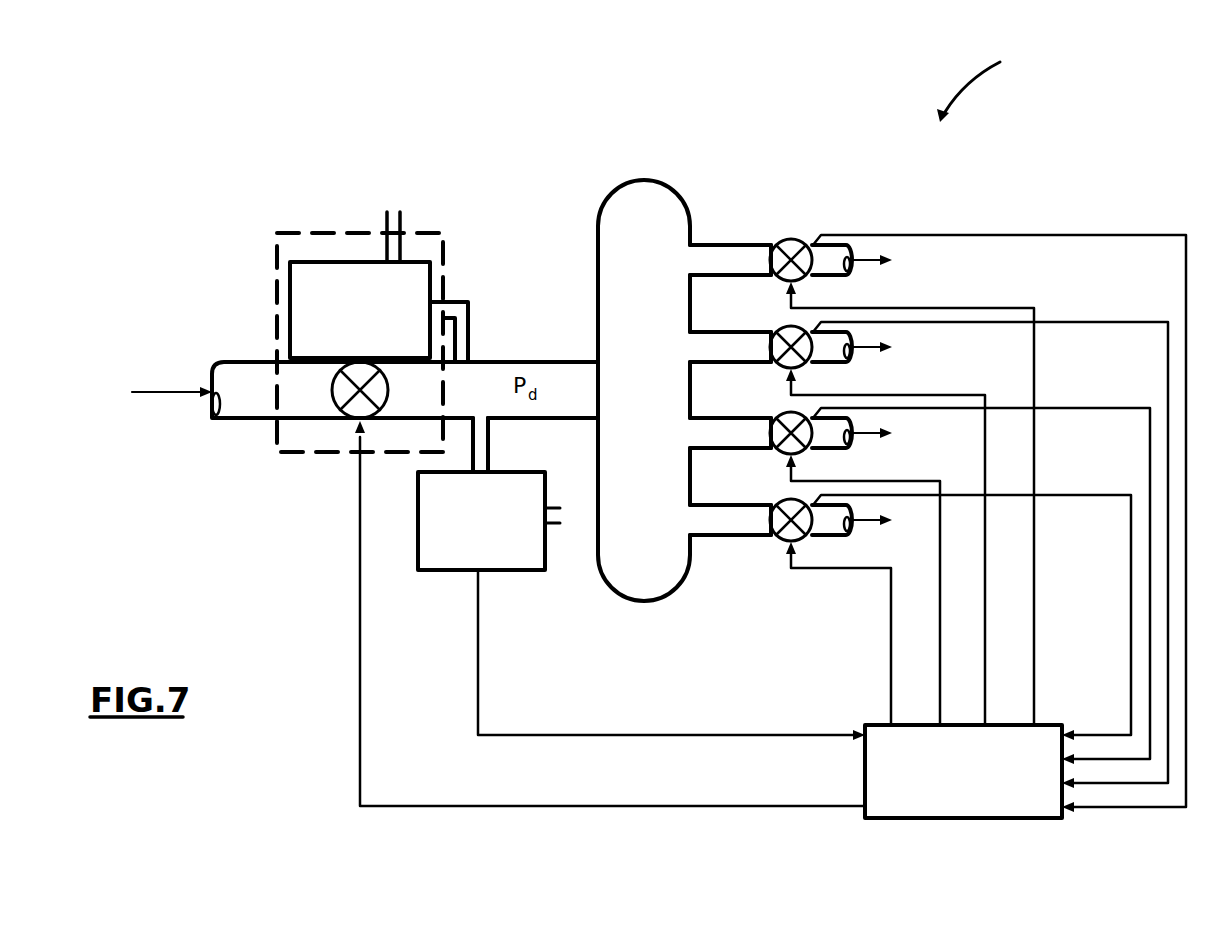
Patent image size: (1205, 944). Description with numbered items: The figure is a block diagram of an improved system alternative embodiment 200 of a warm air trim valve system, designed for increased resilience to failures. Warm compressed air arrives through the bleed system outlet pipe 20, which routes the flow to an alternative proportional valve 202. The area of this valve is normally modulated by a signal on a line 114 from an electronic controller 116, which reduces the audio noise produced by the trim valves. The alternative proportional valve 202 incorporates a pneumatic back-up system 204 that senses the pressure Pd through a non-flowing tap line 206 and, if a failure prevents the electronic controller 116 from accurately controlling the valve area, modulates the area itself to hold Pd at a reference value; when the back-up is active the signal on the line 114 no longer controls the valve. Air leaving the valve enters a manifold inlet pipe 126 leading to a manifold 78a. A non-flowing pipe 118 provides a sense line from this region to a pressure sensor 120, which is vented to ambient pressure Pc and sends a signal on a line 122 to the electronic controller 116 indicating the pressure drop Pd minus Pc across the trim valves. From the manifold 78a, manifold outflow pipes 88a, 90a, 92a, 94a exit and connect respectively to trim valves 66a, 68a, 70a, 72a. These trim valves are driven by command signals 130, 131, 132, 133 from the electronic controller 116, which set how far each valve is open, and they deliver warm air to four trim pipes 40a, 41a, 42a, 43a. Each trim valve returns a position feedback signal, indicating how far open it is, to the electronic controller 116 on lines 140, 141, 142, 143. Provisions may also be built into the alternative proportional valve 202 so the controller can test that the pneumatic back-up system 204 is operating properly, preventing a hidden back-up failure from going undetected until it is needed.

The bleed system outlet pipe 20 is at (243, 414).
The manifold inlet pipe 126 is at (483, 372).
The alternative proportional valve 202 is at (322, 226).
The pneumatic back-up system 204 is at (423, 260).
The non-flowing tap line 206 is at (467, 303).
The non-flowing pipe 118 is at (492, 447).
The pressure sensor 120 is at (515, 570).
The line 122 is at (478, 663).
The line 114 is at (360, 665).
The electronic controller 116 is at (905, 818).
The manifold 78a is at (628, 196).
The manifold outflow pipe 94a is at (730, 275).
The manifold outflow pipe 92a is at (758, 362).
The manifold outflow pipe 90a is at (745, 448).
The manifold outflow pipe 88a is at (745, 535).
The trim valve 72a is at (785, 282).
The trim valve 70a is at (785, 370).
The trim valve 68a is at (783, 455).
The trim valve 66a is at (788, 542).
The trim pipe 43a is at (826, 277).
The trim pipe 42a is at (827, 363).
The trim pipe 41a is at (827, 449).
The trim pipe 40a is at (827, 536).
The command signal 130 is at (891, 652).
The command signal 131 is at (940, 572).
The command signal 132 is at (985, 572).
The command signal 133 is at (1034, 652).
The position feedback line 140 is at (1037, 495).
The position feedback line 141 is at (1054, 408).
The position feedback line 142 is at (1071, 322).
The position feedback line 143 is at (1094, 235).
The improved system alternative embodiment 200 is at (990, 82).